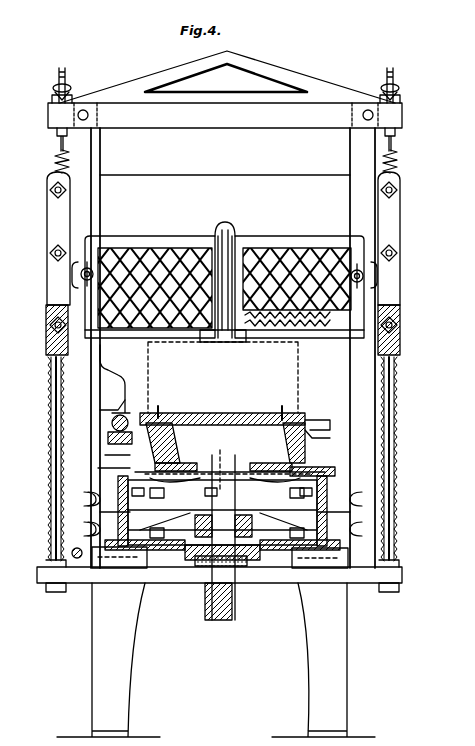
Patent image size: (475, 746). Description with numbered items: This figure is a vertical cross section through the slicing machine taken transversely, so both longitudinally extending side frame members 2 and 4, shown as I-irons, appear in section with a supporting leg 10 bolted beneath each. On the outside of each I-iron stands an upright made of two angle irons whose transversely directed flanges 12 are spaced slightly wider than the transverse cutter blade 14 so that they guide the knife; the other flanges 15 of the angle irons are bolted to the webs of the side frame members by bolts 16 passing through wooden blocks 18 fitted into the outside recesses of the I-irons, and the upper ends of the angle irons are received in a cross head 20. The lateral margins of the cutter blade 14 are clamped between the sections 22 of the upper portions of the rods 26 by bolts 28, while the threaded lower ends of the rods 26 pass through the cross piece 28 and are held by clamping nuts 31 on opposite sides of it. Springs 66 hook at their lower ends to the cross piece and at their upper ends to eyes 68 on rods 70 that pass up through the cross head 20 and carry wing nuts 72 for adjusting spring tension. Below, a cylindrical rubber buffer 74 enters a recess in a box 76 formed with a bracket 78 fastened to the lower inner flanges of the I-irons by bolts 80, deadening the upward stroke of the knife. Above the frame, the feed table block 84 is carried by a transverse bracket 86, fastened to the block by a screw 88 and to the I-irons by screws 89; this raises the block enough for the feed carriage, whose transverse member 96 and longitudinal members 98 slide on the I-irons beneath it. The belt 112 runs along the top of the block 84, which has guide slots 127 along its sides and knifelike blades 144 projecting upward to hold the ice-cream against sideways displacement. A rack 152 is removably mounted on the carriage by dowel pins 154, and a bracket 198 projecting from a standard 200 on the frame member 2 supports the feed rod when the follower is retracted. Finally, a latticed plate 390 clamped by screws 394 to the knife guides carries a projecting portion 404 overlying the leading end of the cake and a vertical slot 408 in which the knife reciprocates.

The side frame member 2 is at (100, 510).
The side frame member 4 is at (340, 512).
The supporting leg 10 is at (94, 634).
The angle iron flanges 12 is at (72, 420).
The transverse cutter blade 14 is at (265, 177).
The angle iron flanges 15 is at (62, 370).
The bolts 16 is at (84, 496).
The wooden blocks 18 is at (105, 556).
The cross head 20 is at (315, 112).
The rod section 22 is at (47, 210).
The rods 26 is at (56, 400).
The cross piece 28 is at (50, 253).
The clamping nuts 31 is at (42, 588).
The springs 66 is at (55, 160).
The eyes 68 is at (57, 142).
The rods 70 is at (58, 85).
The wing nuts 72 is at (72, 98).
The cylindrical buffer 74 is at (200, 566).
The box 76 is at (252, 515).
The bracket 78 is at (262, 545).
The bolts 80 is at (152, 528).
The block 84 is at (310, 420).
The transverse bracket 86 is at (205, 488).
The screw 88 is at (212, 485).
The screws 89 is at (138, 496).
The transverse member 96 is at (315, 466).
The longitudinal members 98 is at (175, 463).
The belt 112 is at (218, 413).
The guide slots 127 is at (318, 434).
The knifelike blades 144 is at (160, 406).
The rack 152 is at (105, 452).
The dowel pins 154 is at (98, 468).
The bracket 198 is at (125, 398).
The standard 200 is at (108, 378).
The plate 390 is at (296, 240).
The clamping screws 394 is at (80, 276).
The projecting portion 404 is at (222, 340).
The vertical slot 408 is at (226, 232).